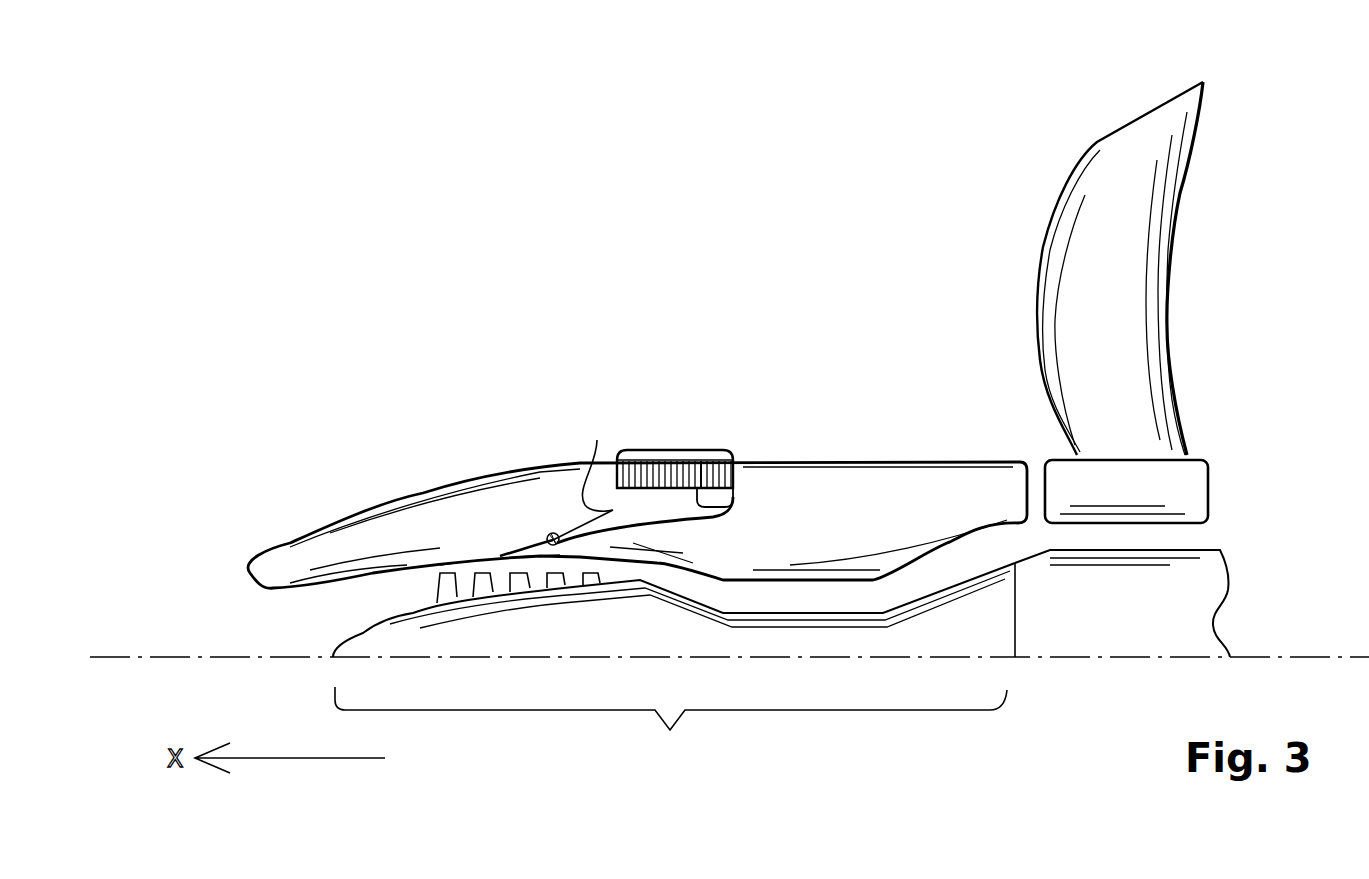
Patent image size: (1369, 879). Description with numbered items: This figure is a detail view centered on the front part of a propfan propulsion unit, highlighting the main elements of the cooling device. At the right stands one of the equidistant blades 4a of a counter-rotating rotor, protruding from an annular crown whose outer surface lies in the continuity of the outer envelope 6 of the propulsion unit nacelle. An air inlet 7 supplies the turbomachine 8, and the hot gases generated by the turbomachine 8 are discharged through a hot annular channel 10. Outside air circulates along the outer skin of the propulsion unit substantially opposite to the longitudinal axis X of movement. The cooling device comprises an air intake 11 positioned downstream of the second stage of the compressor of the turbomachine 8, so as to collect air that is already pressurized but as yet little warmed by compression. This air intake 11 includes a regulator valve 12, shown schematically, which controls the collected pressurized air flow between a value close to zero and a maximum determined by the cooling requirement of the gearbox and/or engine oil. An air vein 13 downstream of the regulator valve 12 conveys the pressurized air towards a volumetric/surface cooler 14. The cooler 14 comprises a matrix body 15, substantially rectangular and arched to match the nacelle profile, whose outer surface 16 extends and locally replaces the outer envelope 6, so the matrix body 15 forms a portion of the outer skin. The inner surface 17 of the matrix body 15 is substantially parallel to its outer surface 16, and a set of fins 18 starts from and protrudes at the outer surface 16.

The blades 4a is at (1133, 135).
The outer envelope 6 is at (420, 487).
The air inlet 7 is at (328, 602).
The turbomachine 8 is at (674, 665).
The hot annular channel 10 is at (1167, 541).
The air intake 11 is at (525, 547).
The regulator valve 12 is at (553, 532).
The air vein 13 is at (597, 461).
The volumetric/surface cooler 14 is at (708, 422).
The matrix body 15 is at (703, 470).
The outer surface 16 is at (660, 460).
The inner surface 17 is at (727, 498).
The fins 18 is at (650, 447).